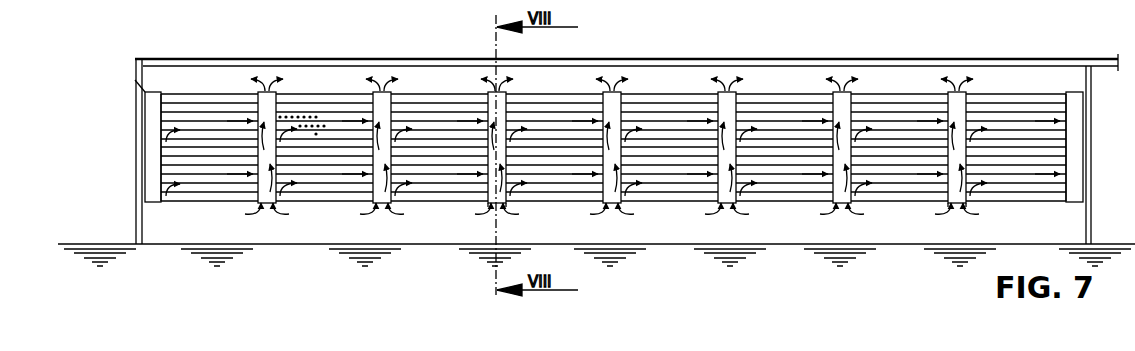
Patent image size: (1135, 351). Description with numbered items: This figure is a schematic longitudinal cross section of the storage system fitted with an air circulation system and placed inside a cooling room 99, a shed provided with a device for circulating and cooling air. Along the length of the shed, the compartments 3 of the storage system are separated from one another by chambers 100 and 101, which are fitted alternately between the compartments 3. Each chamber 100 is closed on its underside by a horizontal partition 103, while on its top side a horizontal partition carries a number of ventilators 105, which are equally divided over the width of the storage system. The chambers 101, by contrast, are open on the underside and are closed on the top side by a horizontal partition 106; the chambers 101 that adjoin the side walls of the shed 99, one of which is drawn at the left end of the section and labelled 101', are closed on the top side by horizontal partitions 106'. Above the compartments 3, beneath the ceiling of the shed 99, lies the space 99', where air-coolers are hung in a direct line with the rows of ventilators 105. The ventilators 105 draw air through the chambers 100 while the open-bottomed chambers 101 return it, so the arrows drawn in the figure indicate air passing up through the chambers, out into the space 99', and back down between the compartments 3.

The compartment 3 is at (319, 91).
The cooling room 99 is at (626, 39).
The space above the compartments 99' is at (630, 79).
The chamber 100 is at (500, 204).
The chamber 101 is at (956, 155).
The end wall 101' is at (120, 151).
The horizontal partition 103 is at (492, 204).
The ventilator 105 is at (504, 90).
The horizontal partition 106 is at (696, 121).
The horizontal partition 106' is at (122, 130).